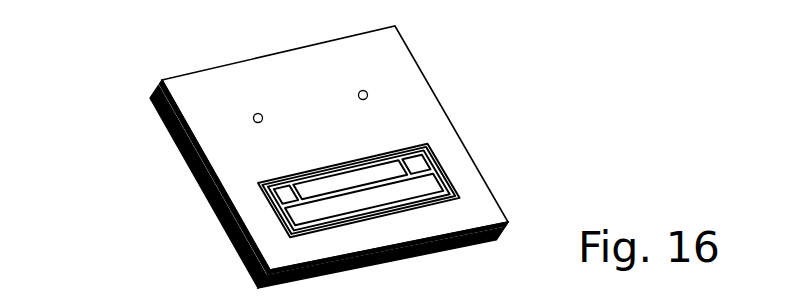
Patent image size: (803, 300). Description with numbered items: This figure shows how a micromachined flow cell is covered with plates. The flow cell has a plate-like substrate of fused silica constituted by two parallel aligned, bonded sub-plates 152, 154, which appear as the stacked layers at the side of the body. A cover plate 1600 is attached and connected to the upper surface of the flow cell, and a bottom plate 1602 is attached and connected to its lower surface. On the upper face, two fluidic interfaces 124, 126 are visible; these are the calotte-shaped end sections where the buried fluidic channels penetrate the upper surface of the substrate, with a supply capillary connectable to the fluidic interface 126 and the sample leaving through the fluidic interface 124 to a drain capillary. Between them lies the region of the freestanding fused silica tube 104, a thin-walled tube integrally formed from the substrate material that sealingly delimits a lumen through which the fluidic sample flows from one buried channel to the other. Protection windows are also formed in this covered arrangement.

The cover plate 1600 is at (440, 135).
The sub-plate 152 is at (160, 103).
The bottom plate 1602 is at (203, 187).
The sub-plate 154 is at (508, 223).
The fluidic interface 126 is at (258, 113).
The fluidic interface 124 is at (368, 93).
The fused silica tube 104 is at (373, 188).